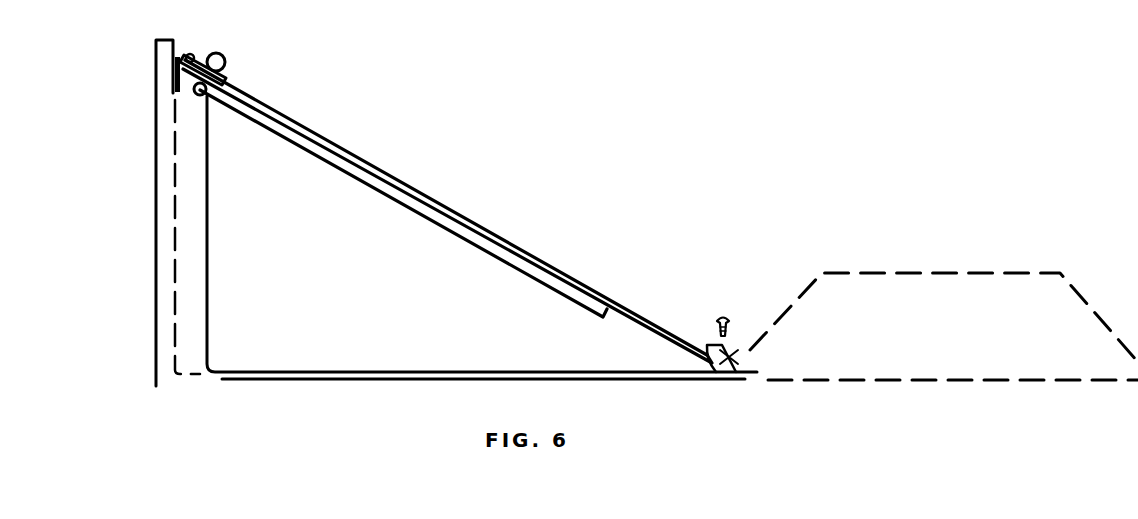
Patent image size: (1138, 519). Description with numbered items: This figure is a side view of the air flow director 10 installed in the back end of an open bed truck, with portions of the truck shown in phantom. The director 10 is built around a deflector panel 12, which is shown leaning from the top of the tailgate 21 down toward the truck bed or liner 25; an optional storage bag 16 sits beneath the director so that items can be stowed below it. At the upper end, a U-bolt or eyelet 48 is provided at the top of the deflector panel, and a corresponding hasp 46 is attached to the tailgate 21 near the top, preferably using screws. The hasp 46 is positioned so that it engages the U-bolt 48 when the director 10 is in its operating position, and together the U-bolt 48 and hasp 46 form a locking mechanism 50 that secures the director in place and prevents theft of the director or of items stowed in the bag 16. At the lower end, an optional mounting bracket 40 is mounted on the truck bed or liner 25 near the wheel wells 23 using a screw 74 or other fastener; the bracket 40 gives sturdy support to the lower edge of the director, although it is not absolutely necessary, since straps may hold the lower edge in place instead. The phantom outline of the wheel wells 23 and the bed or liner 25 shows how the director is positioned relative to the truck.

The air flow director 10 is at (456, 163).
The deflector panel 12 is at (532, 259).
The storage bag 16 is at (207, 275).
The tailgate 21 is at (166, 204).
The wheel wells 23 is at (1102, 314).
The truck bed or liner 25 is at (1006, 392).
The mounting bracket 40 is at (744, 356).
The hasp 46 is at (194, 56).
The U-bolt or eyelet 48 is at (226, 72).
The locking mechanism 50 is at (234, 58).
The screw 74 is at (723, 316).